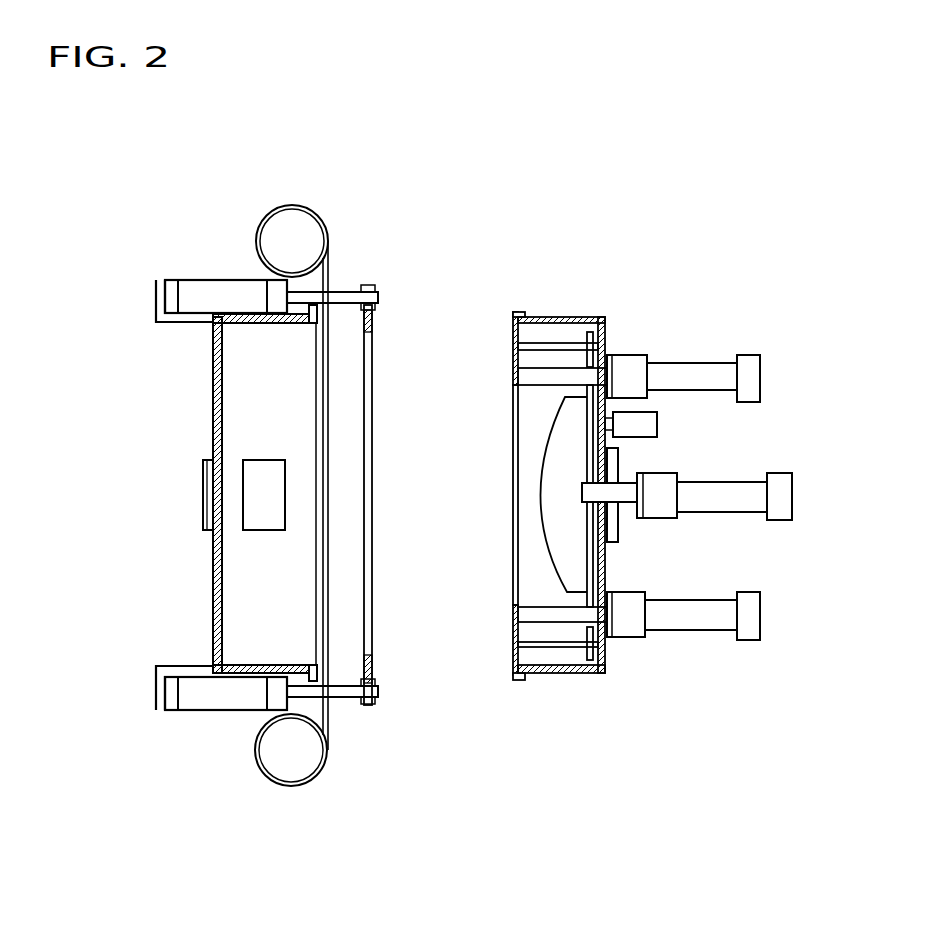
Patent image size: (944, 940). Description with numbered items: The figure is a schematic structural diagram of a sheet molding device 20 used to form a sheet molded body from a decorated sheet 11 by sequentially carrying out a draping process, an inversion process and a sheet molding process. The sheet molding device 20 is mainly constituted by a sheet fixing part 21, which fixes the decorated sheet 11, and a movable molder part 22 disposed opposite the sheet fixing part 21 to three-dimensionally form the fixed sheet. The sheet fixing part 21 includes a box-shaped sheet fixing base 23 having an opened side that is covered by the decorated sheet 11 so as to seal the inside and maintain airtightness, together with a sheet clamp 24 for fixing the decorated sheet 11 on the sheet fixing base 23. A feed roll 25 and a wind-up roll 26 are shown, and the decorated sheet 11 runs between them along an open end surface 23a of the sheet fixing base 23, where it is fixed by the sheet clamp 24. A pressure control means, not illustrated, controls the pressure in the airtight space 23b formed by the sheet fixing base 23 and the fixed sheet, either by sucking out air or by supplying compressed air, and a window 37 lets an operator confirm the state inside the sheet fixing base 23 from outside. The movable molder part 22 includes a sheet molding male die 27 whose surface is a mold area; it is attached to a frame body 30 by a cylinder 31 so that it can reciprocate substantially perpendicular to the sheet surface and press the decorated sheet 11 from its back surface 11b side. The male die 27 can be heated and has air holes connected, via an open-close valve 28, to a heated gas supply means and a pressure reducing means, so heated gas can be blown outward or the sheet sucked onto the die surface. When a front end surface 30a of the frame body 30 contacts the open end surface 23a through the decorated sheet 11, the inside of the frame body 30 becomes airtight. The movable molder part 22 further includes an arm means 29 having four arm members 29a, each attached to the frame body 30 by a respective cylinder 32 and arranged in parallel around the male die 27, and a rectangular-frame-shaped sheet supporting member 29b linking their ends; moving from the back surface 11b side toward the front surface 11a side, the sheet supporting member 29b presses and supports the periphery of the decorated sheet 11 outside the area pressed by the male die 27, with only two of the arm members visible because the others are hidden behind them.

The sheet molding device 20 is at (134, 246).
The sheet fixing part 21 is at (211, 390).
The movable molder part 22 is at (836, 343).
The sheet fixing base 23 is at (213, 590).
The open end surface 23a is at (317, 318).
The space 23b is at (253, 425).
The sheet clamp 24 is at (372, 317).
The feed roll 25 is at (295, 228).
The wind-up roll 26 is at (305, 750).
The decorated sheet 11 is at (325, 400).
The front surface 11a is at (322, 635).
The back surface 11b is at (328, 497).
The window 37 is at (205, 485).
The sheet molding male die 27 is at (555, 462).
The open-close valve 28 is at (643, 425).
The arm means 29 is at (545, 623).
The arm members 29a is at (545, 380).
The sheet supporting member 29b is at (513, 568).
The frame body 30 is at (580, 318).
The front end surface 30a is at (513, 330).
The cylinder 31 is at (742, 495).
The cylinder 32 is at (708, 378).